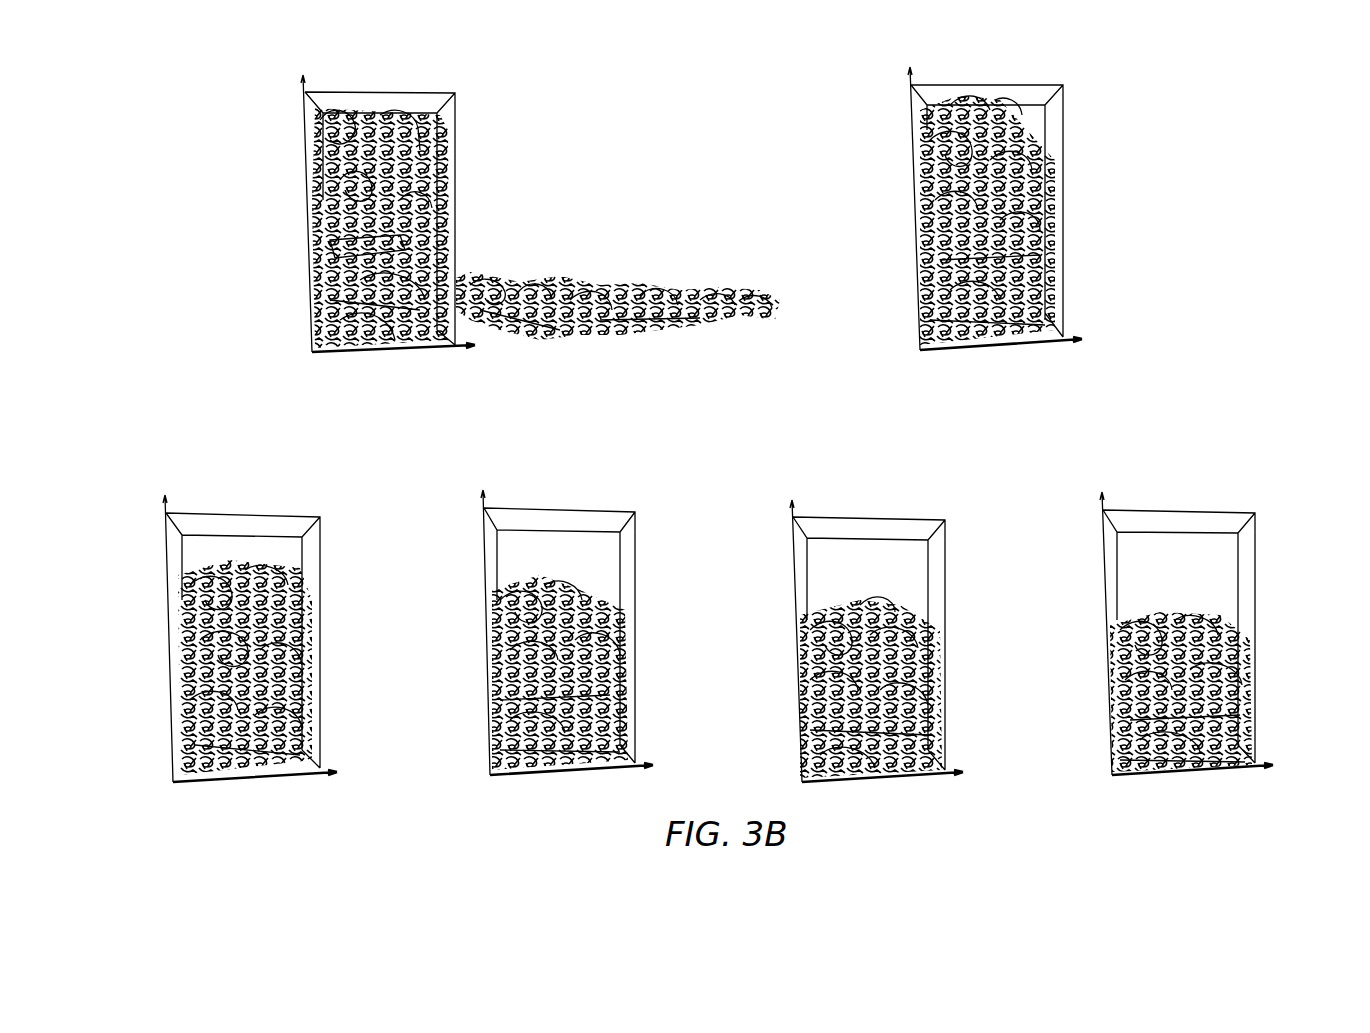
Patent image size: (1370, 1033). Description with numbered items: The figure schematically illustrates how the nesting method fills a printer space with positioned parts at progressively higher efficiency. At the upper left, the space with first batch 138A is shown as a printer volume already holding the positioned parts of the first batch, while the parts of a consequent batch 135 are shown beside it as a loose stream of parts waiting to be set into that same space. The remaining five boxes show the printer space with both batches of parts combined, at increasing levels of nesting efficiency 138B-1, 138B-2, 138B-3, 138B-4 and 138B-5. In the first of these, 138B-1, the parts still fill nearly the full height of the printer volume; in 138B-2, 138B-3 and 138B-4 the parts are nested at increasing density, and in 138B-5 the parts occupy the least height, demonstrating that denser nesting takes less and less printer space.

The space with first batch 138A is at (488, 118).
The parts of a consequent batch 135 is at (615, 263).
The printer space with both batches at first nesting efficiency level 138B-1 is at (1095, 115).
The printer space with both batches at second nesting efficiency level 138B-2 is at (354, 540).
The printer space with both batches at third nesting efficiency level 138B-3 is at (660, 540).
The printer space with both batches at fourth nesting efficiency level 138B-4 is at (966, 535).
The printer space with both batches at fifth nesting efficiency level 138B-5 is at (1278, 533).